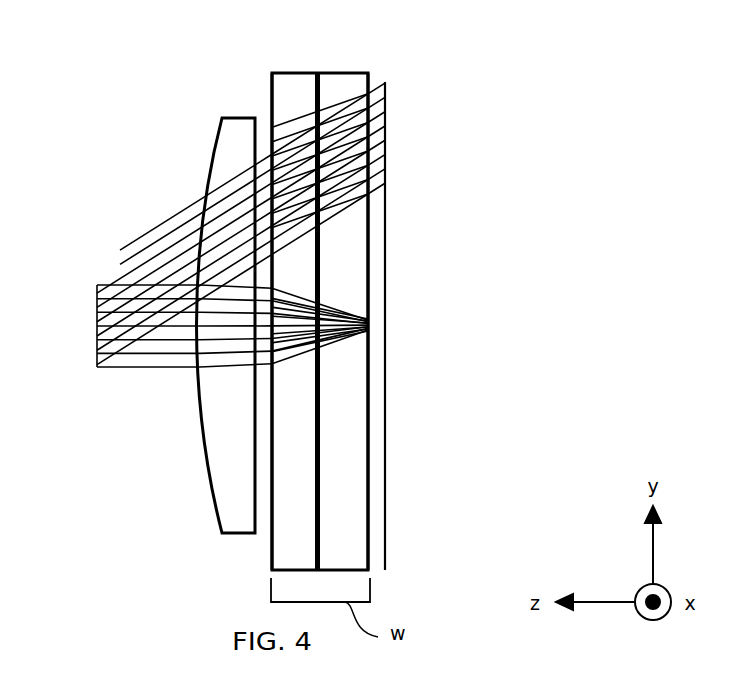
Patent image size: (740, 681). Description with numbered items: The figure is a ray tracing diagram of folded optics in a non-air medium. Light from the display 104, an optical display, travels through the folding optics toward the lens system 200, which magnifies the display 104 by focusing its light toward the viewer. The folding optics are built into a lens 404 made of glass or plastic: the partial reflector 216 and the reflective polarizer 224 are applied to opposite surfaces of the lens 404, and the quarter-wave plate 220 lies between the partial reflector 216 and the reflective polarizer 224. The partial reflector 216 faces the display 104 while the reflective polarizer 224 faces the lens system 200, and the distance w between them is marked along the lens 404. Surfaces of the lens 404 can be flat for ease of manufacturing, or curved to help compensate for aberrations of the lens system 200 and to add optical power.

The lens system 200 is at (225, 482).
The lens 404 is at (333, 79).
The reflective polarizer 224 is at (272, 93).
The quarter-wave plate 220 is at (317, 72).
The partial reflector 216 is at (369, 78).
The display 104 is at (385, 155).